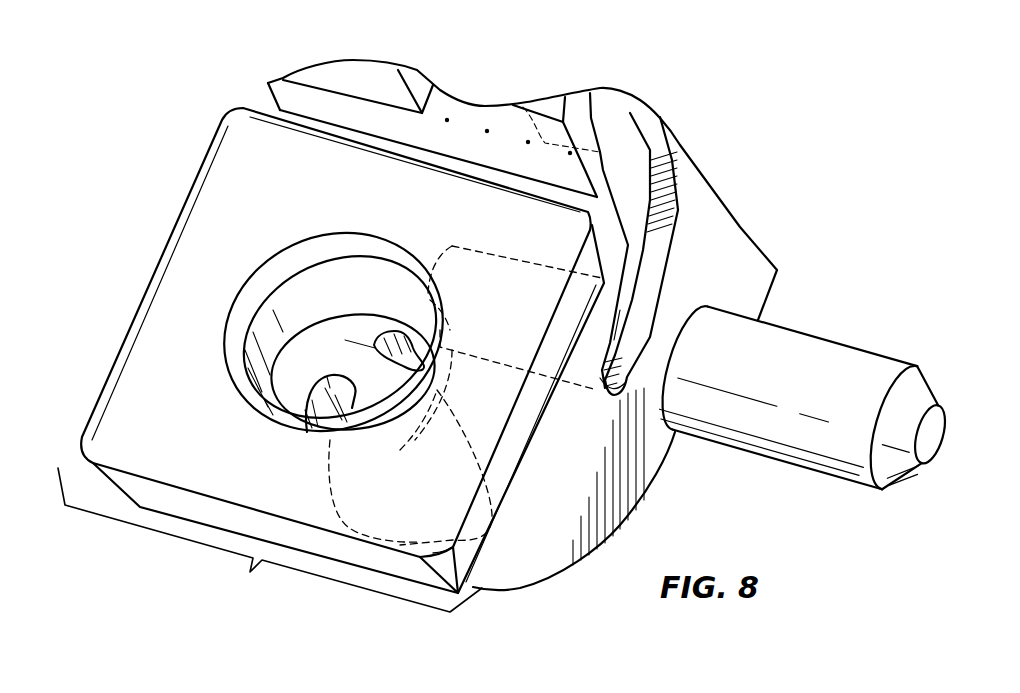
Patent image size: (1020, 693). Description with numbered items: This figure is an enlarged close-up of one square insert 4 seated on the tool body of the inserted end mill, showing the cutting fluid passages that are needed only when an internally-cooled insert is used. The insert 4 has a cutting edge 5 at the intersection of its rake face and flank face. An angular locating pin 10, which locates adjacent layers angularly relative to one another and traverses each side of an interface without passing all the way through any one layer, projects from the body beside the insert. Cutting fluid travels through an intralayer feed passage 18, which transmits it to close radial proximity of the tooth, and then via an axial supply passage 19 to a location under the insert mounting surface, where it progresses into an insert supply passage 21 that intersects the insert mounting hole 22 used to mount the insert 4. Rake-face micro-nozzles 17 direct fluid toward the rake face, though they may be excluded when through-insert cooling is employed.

The insert 4 is at (497, 470).
The cutting edge 5 is at (270, 540).
The angular locating pin 10 is at (804, 350).
The rake-face micro-nozzle 17 is at (487, 131).
The intralayer feed passage 18 is at (630, 218).
The axial supply passage 19 is at (617, 367).
The insert supply passage 21 is at (358, 343).
The insert mounting hole 22 is at (375, 345).